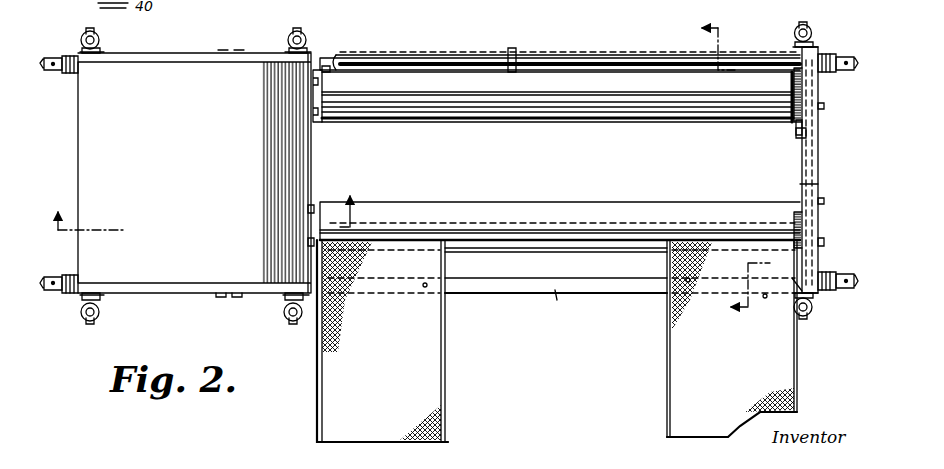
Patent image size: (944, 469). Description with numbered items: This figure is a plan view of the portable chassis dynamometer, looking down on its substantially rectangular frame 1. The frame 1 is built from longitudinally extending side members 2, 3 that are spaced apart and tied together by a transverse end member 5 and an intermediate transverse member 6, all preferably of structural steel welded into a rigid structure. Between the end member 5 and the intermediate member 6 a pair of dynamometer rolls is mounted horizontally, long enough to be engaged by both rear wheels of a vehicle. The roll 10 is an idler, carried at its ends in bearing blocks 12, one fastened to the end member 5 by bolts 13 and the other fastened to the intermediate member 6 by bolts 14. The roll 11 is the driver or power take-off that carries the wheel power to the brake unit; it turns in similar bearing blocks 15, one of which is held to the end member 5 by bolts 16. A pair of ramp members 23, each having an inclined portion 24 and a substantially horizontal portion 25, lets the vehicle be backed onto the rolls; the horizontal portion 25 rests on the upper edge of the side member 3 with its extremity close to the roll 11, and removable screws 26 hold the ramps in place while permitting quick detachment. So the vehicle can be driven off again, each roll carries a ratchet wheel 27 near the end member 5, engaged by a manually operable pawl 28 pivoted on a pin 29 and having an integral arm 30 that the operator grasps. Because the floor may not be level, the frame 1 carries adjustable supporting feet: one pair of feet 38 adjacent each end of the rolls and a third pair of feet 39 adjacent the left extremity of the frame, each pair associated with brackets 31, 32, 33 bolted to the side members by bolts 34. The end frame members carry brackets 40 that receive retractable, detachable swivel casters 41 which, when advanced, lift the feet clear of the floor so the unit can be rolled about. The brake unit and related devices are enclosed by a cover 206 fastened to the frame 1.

The frame 1 is at (604, 292).
The side member 2 is at (624, 52).
The side member 3 is at (309, 242).
The transverse end member 5 is at (818, 158).
The intermediate transverse member 6 is at (726, 165).
The idler roll 10 is at (712, 114).
The driver roll 11 is at (640, 202).
The bearing blocks 12 is at (328, 66).
The bolts 13 is at (824, 107).
The bolts 14 is at (317, 116).
The bearing blocks 15 is at (824, 243).
The bolts 16 is at (824, 202).
The cover 206 is at (193, 288).
The ramp members 23 is at (398, 441).
The inclined portion 24 is at (446, 372).
The horizontal portion 25 is at (423, 242).
The removable screws 26 is at (423, 287).
The ratchet wheel 27 is at (794, 100).
The pawl 28 is at (796, 121).
The pin 29 is at (798, 138).
The arm 30 is at (805, 131).
The bracket 31 is at (102, 53).
The bracket 32 is at (287, 50).
The bracket 33 is at (806, 62).
The bolts 34 is at (84, 46).
The adjustable supporting feet 38 is at (297, 30).
The adjustable supporting feet 39 is at (98, 38).
The brackets 40 is at (68, 75).
The casters 41 is at (40, 62).